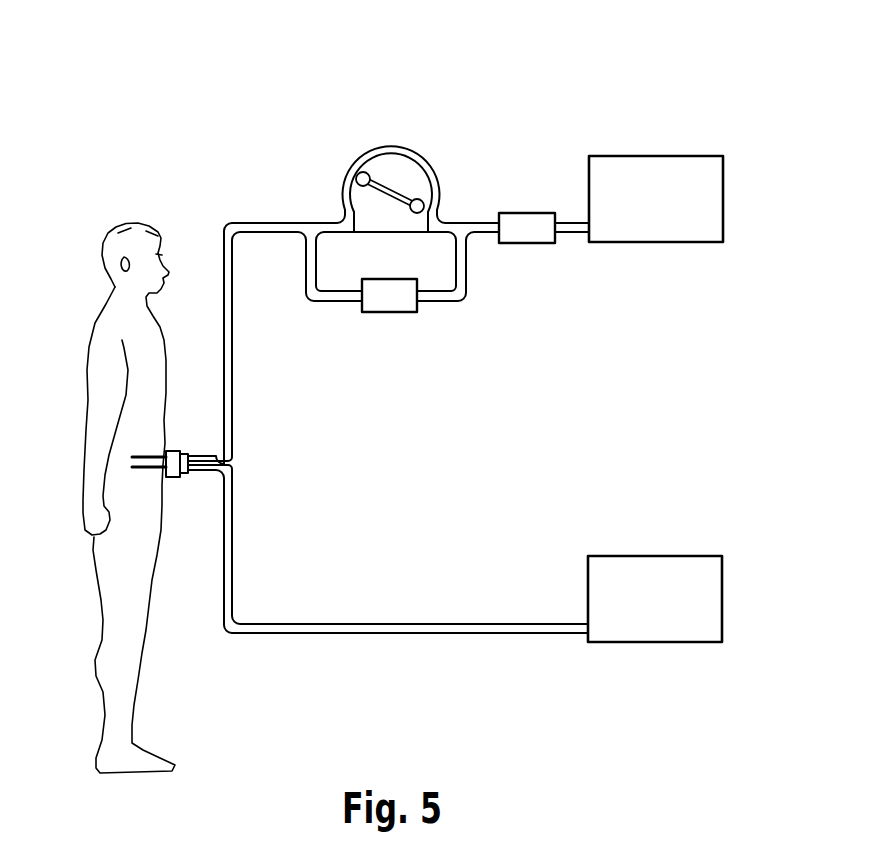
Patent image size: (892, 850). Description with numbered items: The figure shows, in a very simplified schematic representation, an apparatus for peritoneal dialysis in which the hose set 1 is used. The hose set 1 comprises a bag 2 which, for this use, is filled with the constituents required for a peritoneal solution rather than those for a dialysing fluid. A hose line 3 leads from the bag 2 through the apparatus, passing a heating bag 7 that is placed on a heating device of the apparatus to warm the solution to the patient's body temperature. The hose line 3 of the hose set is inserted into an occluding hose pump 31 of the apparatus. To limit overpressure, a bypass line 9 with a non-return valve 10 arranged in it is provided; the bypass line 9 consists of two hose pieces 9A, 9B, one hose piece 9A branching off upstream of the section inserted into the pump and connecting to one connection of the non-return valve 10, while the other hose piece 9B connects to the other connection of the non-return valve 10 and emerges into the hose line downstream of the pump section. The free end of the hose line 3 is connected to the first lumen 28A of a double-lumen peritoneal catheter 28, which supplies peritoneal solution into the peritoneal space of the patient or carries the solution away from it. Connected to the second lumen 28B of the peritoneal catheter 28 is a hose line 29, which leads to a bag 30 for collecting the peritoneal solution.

The hose set 1 is at (483, 128).
The bag 2 is at (662, 156).
The hose line 3 is at (573, 223).
The heating bag 7 is at (512, 213).
The bypass line 9 is at (347, 301).
The hose piece 9A is at (317, 302).
The hose piece 9B is at (456, 301).
The non-return valve 10 is at (388, 312).
The double-lumen peritoneal catheter 28 is at (132, 473).
The first lumen 28A is at (141, 457).
The second lumen 28B is at (141, 457).
The hose line 29 is at (412, 623).
The bag 30 is at (691, 556).
The occluding hose pump 31 is at (404, 185).